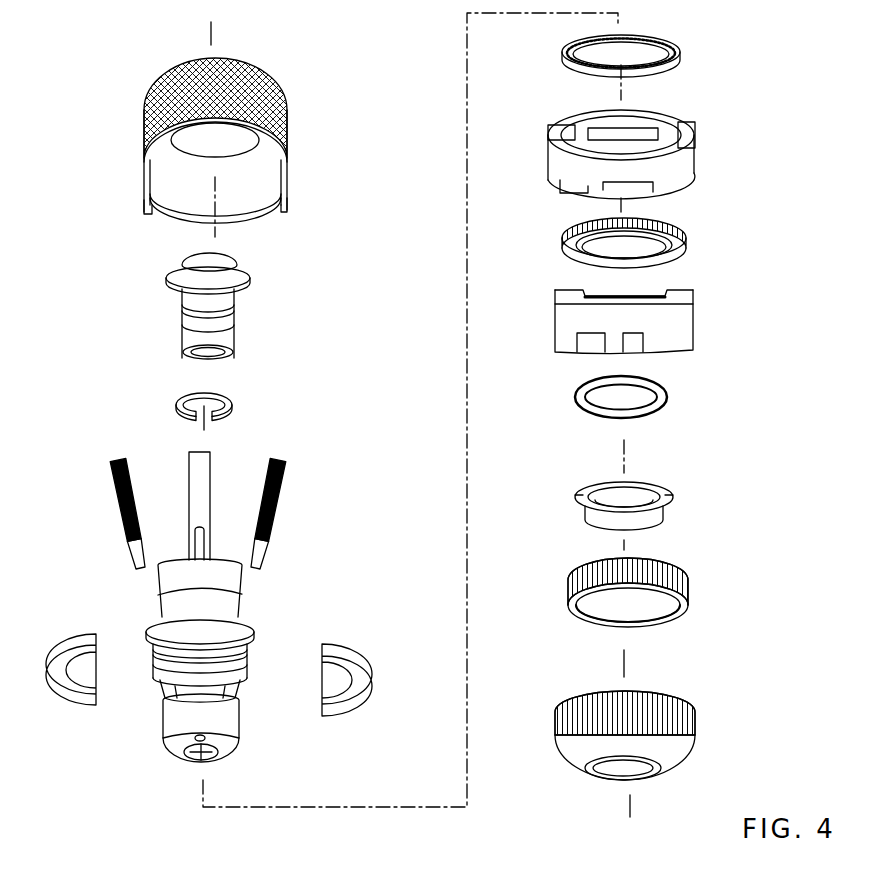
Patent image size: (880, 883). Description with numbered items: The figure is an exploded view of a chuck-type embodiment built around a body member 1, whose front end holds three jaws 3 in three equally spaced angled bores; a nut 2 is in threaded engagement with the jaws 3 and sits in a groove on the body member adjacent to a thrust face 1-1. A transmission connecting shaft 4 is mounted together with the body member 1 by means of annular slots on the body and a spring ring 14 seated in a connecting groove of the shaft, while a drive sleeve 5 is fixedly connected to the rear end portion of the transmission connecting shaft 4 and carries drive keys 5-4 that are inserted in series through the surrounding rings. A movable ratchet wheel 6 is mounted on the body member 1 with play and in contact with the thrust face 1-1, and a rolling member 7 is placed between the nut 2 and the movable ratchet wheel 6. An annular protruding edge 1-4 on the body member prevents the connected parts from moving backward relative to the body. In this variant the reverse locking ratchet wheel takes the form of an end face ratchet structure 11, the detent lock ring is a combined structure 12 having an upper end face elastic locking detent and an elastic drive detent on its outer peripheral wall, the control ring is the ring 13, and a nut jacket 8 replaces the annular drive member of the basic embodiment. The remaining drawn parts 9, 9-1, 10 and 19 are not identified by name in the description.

The body member 1 is at (202, 604).
The thrust face 1-1 is at (243, 682).
The annular protruding edge 1-4 is at (252, 628).
The nut 2 is at (357, 672).
The jaws 3 is at (278, 488).
The transmission connecting shaft 4 is at (223, 293).
The drive sleeve 5 is at (286, 122).
The drive keys 5-4 is at (282, 188).
The movable ratchet wheel 6 is at (683, 243).
The rolling member 7 is at (658, 410).
The nut jacket 8 is at (672, 496).
The knurled nut 9 is at (685, 590).
The nut lip 9-1 is at (574, 604).
The knurled end cap 10 is at (683, 720).
The end face ratchet structure 11 is at (673, 49).
The detent lock ring 12 is at (645, 162).
The control ring 13 is at (682, 332).
The spring ring 14 is at (230, 397).
The bottom plug 19 is at (217, 742).